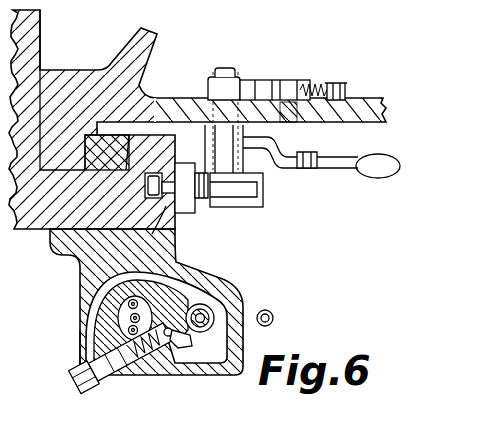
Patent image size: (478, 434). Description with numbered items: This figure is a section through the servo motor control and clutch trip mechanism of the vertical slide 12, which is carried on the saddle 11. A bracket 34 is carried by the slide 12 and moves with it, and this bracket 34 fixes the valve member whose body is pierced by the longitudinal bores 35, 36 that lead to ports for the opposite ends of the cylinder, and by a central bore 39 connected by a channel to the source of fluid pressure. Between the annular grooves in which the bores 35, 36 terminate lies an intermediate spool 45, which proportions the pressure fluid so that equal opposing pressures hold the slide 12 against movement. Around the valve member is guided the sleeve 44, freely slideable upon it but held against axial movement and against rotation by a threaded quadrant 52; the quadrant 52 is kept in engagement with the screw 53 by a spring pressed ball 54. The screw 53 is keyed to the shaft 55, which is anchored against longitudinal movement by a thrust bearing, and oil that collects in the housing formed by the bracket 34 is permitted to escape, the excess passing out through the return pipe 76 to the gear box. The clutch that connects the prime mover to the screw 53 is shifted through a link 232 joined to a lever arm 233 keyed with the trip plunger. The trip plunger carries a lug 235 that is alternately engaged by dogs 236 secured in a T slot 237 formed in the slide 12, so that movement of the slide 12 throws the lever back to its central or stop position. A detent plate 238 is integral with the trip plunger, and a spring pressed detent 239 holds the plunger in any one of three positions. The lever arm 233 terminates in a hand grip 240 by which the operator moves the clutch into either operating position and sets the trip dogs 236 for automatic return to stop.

The saddle 11 is at (98, 76).
The slide 12 is at (180, 227).
The bracket 34 is at (173, 258).
The longitudinal bore 35 is at (97, 343).
The longitudinal bore 36 is at (87, 297).
The central bore 39 is at (128, 305).
The sleeve 44 is at (130, 318).
The intermediate spool 45 is at (128, 330).
The threaded quadrant 52 is at (182, 342).
The screw 53 is at (228, 300).
The spring pressed ball 54 is at (167, 337).
The shaft 55 is at (212, 305).
The return pipe 76 is at (274, 315).
The link 232 is at (320, 153).
The lever arm 233 is at (290, 168).
The lug 235 is at (263, 202).
The dogs 236 is at (233, 192).
The T slot 237 is at (152, 237).
The detent plate 238 is at (247, 85).
The spring pressed detent 239 is at (306, 83).
The hand grip 240 is at (372, 170).